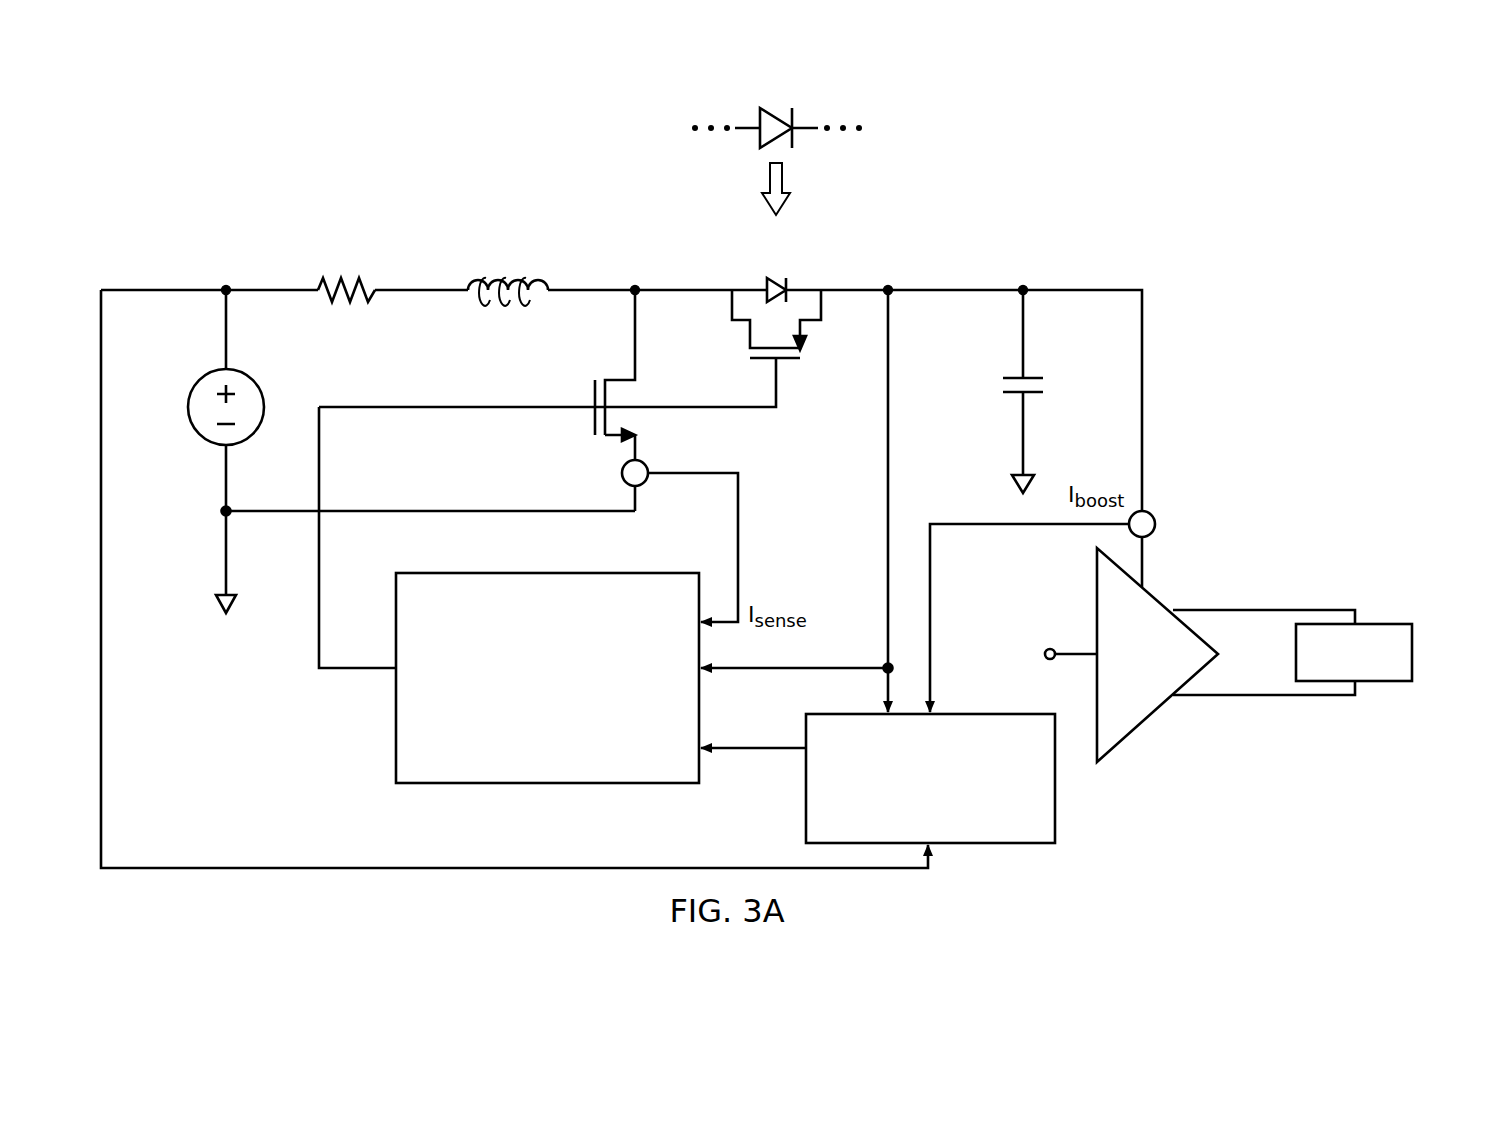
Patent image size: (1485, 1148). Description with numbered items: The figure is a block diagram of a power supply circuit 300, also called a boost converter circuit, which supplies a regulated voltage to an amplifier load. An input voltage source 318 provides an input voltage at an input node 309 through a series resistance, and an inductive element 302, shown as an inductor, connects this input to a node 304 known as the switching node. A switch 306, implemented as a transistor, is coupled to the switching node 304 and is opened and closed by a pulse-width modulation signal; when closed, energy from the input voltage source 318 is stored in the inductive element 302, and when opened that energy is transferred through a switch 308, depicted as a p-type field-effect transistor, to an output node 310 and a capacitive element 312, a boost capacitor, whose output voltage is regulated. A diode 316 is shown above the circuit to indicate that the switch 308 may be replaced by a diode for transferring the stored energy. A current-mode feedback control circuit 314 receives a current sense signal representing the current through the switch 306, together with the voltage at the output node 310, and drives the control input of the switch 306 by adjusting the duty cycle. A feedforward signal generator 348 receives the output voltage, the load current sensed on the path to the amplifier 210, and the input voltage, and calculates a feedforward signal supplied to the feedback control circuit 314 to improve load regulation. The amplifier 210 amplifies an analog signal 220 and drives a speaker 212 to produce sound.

The power supply circuit 300 is at (205, 150).
The diode 316 is at (762, 118).
The input node 309 is at (228, 288).
The input voltage source 318 is at (255, 382).
The inductive element 302 is at (508, 314).
The node 304 is at (634, 288).
The switch 306 is at (615, 438).
The switch 308 is at (778, 362).
The output node 310 is at (1025, 288).
The capacitive element 312 is at (1030, 378).
The feedback control circuit 314 is at (628, 572).
The feedforward signal generator 348 is at (988, 845).
The amplifier 210 is at (1170, 655).
The analog signal 220 is at (1058, 657).
The speaker 212 is at (1413, 652).